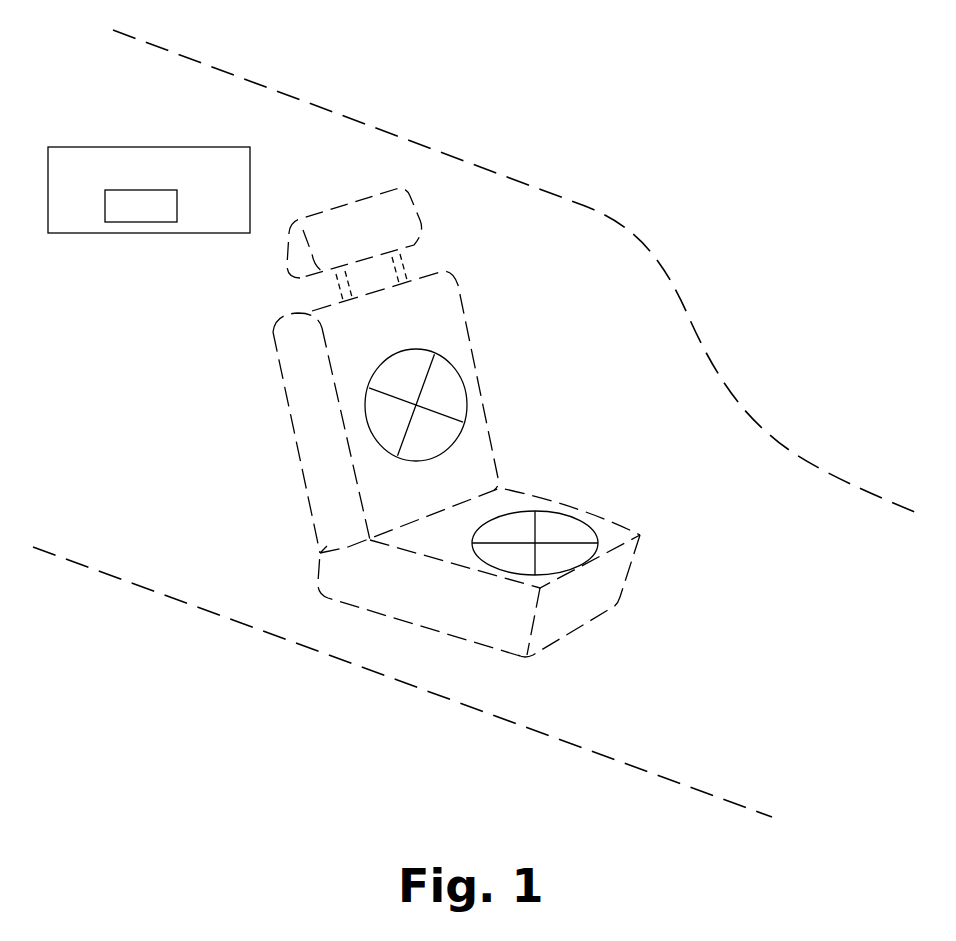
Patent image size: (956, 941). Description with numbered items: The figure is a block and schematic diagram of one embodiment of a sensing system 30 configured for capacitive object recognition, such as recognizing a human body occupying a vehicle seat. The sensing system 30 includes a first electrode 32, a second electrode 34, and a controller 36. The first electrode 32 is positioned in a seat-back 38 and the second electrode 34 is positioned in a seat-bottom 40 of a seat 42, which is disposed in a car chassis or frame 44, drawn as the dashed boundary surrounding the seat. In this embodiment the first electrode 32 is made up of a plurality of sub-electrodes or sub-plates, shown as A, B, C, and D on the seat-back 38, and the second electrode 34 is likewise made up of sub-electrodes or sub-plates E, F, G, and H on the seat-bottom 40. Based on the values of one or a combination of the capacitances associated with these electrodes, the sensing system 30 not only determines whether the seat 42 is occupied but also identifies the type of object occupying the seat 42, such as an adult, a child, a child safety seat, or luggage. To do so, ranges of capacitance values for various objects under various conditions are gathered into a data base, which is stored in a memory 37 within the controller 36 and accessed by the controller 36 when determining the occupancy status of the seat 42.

The sensing system 30 is at (567, 92).
The first electrode 32 is at (465, 403).
The second electrode 34 is at (582, 515).
The controller 36 is at (149, 194).
The memory 37 is at (177, 212).
The seat-back 38 is at (460, 288).
The seat-bottom 40 is at (640, 534).
The seat 42 is at (493, 422).
The car chassis or frame 44 is at (880, 498).